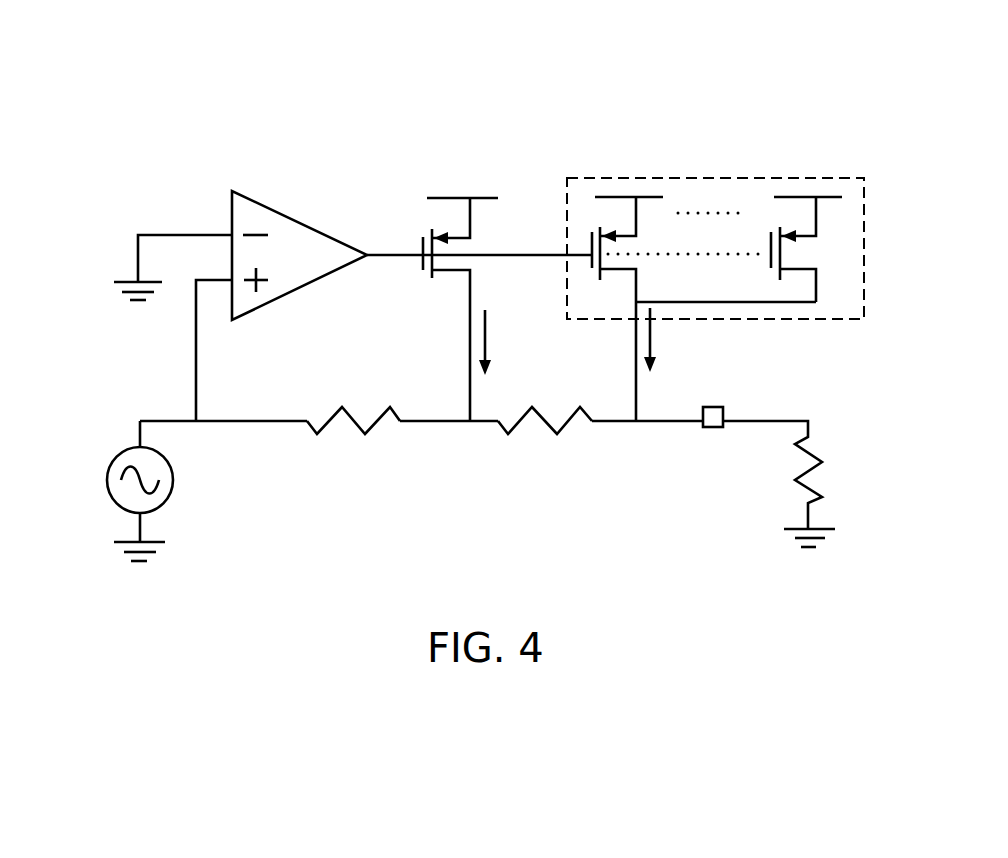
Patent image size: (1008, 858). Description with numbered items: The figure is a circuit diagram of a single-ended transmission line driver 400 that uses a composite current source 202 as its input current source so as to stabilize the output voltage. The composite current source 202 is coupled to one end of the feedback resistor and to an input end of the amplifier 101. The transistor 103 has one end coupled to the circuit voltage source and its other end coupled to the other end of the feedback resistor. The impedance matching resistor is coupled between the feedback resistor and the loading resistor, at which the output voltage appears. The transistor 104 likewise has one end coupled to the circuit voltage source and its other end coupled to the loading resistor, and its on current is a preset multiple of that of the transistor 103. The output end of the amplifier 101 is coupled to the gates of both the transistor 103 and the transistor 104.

The transmission line driver 400 is at (607, 86).
The amplifier 101 is at (306, 223).
The transistor 103 is at (470, 228).
The transistor 104 is at (681, 178).
The composite current source 202 is at (112, 457).